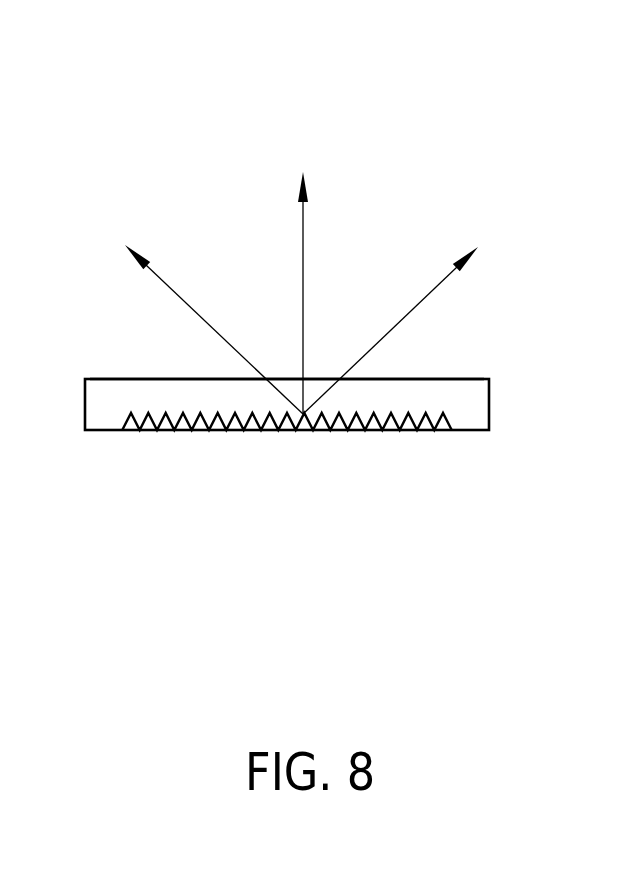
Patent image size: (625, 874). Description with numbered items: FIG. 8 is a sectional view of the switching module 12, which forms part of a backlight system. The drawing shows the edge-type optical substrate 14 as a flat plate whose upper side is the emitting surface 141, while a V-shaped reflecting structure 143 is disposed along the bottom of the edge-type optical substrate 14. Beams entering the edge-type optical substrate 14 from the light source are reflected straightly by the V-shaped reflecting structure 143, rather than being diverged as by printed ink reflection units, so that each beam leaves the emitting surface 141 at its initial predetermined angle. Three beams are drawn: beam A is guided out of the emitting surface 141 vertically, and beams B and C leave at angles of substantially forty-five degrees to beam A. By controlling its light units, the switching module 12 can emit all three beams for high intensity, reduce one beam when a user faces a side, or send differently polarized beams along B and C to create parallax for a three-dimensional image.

The switching module 12 is at (488, 74).
The edge-type optical substrate 14 is at (478, 397).
The emitting surface 141 is at (137, 380).
The V-shaped reflecting structure 143 is at (272, 433).